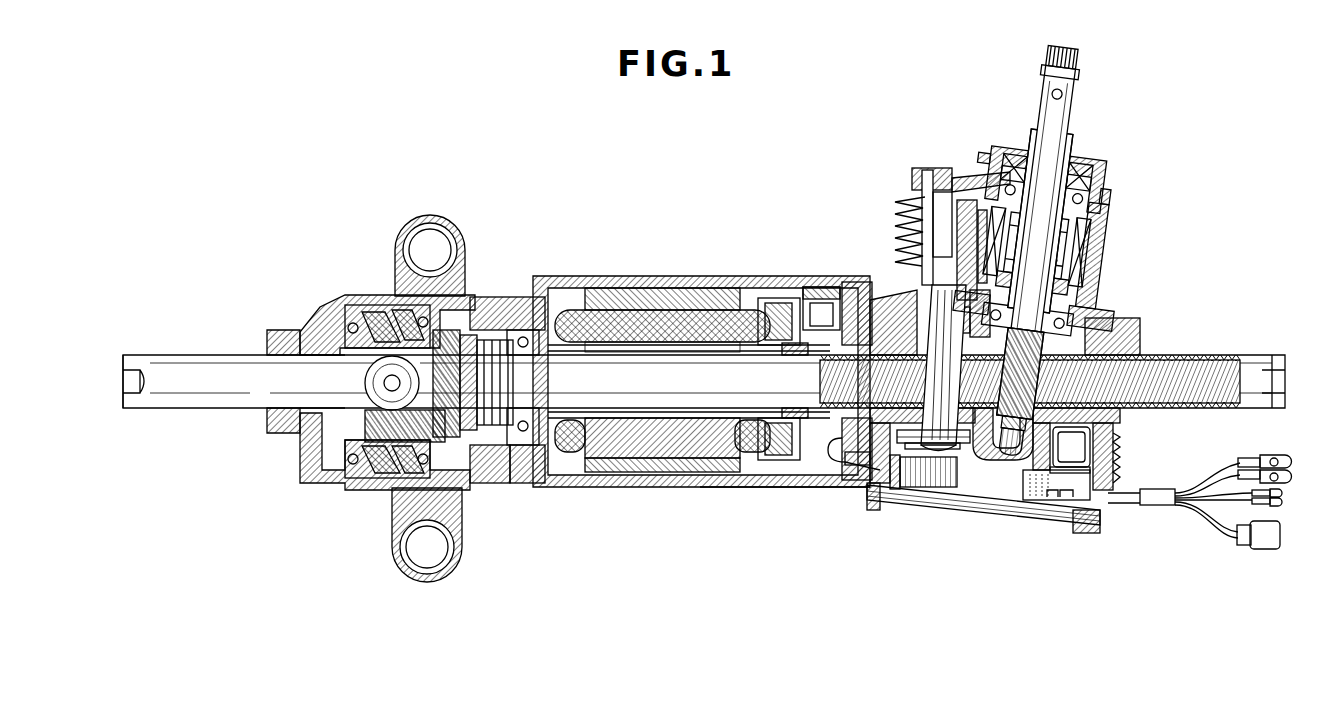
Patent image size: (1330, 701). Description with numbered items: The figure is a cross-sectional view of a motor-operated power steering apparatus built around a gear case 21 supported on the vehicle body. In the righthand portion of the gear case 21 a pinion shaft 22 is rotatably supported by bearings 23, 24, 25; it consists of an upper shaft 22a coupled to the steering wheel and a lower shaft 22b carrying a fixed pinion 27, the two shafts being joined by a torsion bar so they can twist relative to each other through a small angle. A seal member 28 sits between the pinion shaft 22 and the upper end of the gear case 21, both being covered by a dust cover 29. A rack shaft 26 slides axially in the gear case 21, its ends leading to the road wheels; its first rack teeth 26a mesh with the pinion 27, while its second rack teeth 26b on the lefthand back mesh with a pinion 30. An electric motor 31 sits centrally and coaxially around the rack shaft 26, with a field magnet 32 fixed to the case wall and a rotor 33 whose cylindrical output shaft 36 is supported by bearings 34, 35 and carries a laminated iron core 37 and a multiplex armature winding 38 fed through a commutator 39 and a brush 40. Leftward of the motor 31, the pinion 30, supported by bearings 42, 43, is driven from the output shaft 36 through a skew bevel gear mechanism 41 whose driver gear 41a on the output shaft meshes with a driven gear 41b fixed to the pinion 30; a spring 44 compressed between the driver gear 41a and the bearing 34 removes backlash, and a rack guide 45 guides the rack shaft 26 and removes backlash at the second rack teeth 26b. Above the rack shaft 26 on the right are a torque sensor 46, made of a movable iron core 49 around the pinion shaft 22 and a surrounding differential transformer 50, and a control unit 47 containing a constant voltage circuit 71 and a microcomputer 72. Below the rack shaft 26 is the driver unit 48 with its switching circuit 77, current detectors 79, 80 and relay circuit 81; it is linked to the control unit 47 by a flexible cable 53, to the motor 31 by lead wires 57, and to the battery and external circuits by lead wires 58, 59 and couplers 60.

The gear case 21 is at (816, 490).
The pinion shaft 22 is at (1090, 98).
The upper shaft 22a is at (1074, 50).
The lower shaft 22b is at (1090, 288).
The bearing 23 is at (996, 164).
The bearing 24 is at (1110, 316).
The bearing 25 is at (974, 452).
The rack shaft 26 is at (1247, 355).
The first rack teeth 26a is at (1167, 354).
The second rack teeth 26b is at (336, 354).
The pinion 27 is at (1008, 460).
The seal member 28 is at (1090, 171).
The dust cover 29 is at (1033, 130).
The pinion 30 is at (384, 310).
The electric motor 31 is at (705, 270).
The field magnet 32 is at (628, 474).
The rotor 33 is at (756, 300).
The bearing 34 is at (530, 484).
The bearing 35 is at (862, 300).
The output shaft 36 is at (765, 345).
The laminated iron core 37 is at (716, 326).
The armature winding 38 is at (652, 330).
The commutator 39 is at (818, 332).
The brush 40 is at (820, 316).
The skew bevel gear mechanism 41 is at (336, 488).
The driver gear 41a is at (480, 484).
The driven gear 41b is at (320, 453).
The bearing 42 is at (332, 310).
The bearing 43 is at (362, 480).
The spring 44 is at (494, 340).
The rack guide 45 is at (362, 383).
The torque sensor 46 is at (1118, 238).
The control unit 47 is at (928, 156).
The driver unit 48 is at (1068, 563).
The movable iron core 49 is at (1090, 230).
The differential transformer 50 is at (1105, 247).
The flexible cable 53 is at (910, 291).
The lead wires 57 is at (856, 472).
The lead wires 58 is at (1281, 462).
The lead wires 59 is at (1280, 498).
The couplers 60 is at (1268, 548).
The constant voltage circuit 71 is at (932, 205).
The microcomputer 72 is at (963, 215).
The switching circuit 77 is at (1040, 500).
The current detector 79 is at (950, 488).
The current detector 80 is at (932, 446).
The relay circuit 81 is at (1090, 452).